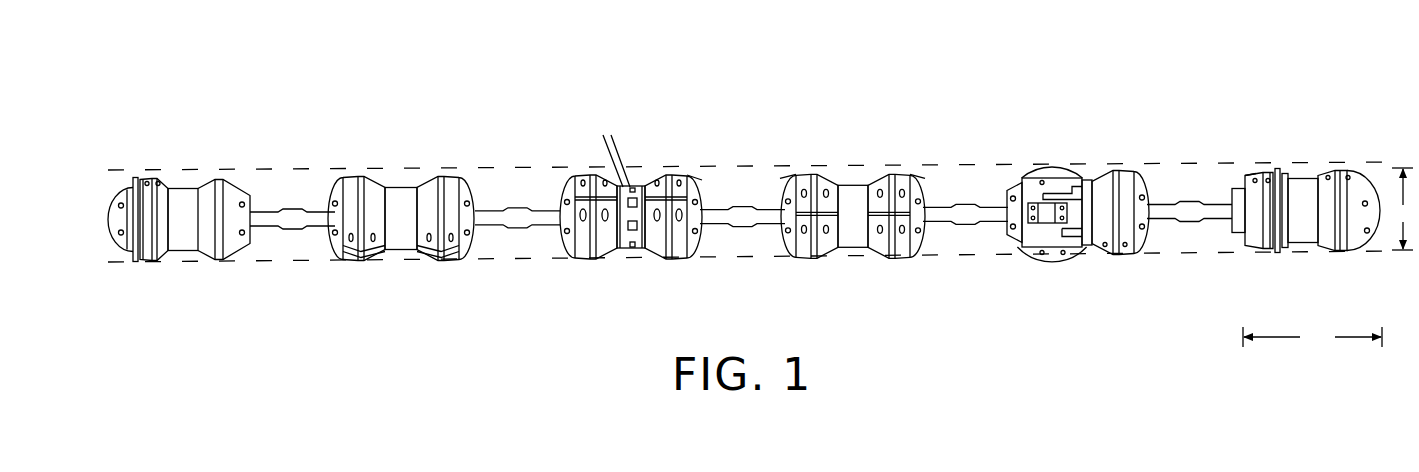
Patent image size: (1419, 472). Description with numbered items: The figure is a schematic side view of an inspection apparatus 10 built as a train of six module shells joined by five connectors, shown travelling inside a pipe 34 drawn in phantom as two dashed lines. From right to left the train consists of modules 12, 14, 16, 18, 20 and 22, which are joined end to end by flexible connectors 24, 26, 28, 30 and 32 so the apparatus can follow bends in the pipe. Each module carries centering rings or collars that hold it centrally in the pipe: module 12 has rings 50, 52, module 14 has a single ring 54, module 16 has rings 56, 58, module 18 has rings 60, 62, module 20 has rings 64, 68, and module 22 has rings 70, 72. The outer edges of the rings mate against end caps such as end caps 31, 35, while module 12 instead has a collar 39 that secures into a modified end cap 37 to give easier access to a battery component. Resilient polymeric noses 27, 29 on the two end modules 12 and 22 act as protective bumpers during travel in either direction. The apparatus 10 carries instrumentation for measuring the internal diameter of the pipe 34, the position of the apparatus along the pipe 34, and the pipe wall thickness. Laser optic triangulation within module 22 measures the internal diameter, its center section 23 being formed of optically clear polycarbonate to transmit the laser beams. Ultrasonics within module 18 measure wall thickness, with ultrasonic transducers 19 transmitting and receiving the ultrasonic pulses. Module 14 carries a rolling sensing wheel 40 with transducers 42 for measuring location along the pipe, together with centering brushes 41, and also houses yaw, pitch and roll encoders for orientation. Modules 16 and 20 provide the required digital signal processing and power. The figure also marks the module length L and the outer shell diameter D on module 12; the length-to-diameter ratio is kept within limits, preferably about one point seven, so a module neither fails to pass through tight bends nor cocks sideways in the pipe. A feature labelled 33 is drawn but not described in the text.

The inspection apparatus 10 is at (542, 83).
The module 12 is at (1320, 189).
The module 14 is at (1100, 176).
The module 16 is at (862, 181).
The module 18 is at (645, 179).
The ultrasonic transducers 19 is at (611, 148).
The module 20 is at (401, 221).
The module 22 is at (169, 190).
The center section 23 is at (180, 260).
The flexible connector 24 is at (1190, 226).
The flexible connector 26 is at (965, 226).
The resilient polymeric nose 27 is at (1378, 179).
The flexible connector 28 is at (742, 230).
The resilient polymeric nose 29 is at (113, 184).
The flexible connector 30 is at (513, 230).
The end cap 31 is at (799, 146).
The flexible connector 32 is at (292, 231).
The flange edge 33 is at (706, 158).
The pipe 34 is at (267, 170).
The end cap 35 is at (933, 150).
The modified end cap 37 is at (1245, 143).
The collar 39 is at (1293, 156).
The sensing wheel 40 is at (1051, 242).
The centering brushes 41 is at (1026, 263).
The transducers 42 is at (1090, 264).
The centering ring 50 is at (1343, 245).
The centering ring 52 is at (1269, 246).
The centering ring 54 is at (1130, 173).
The centering ring 56 is at (896, 245).
The centering ring 58 is at (810, 245).
The centering ring 60 is at (673, 248).
The centering ring 62 is at (588, 251).
The centering ring 64 is at (445, 250).
The centering ring 68 is at (356, 253).
The centering ring 70 is at (224, 267).
The centering ring 72 is at (127, 256).